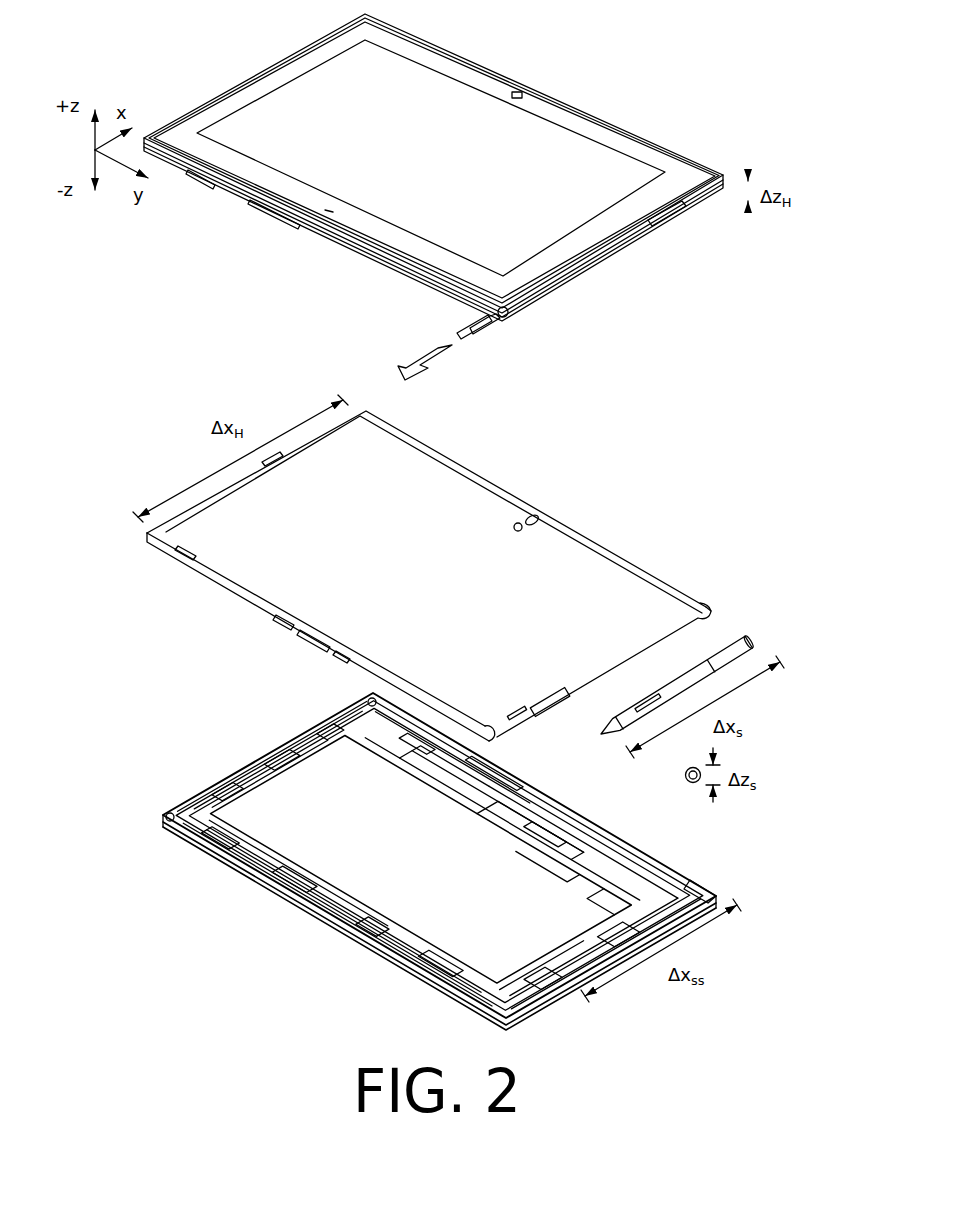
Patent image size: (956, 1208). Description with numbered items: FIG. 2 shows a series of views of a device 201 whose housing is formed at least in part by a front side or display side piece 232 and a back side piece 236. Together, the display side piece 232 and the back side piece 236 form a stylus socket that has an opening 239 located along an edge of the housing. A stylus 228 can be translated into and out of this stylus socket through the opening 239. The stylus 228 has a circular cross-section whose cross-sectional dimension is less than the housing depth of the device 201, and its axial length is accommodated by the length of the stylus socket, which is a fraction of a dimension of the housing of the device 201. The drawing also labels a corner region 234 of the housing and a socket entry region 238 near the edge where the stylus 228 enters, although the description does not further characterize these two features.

The device 201 is at (202, 56).
The stylus 228 is at (492, 320).
The front side or display side piece 232 is at (705, 180).
The housing corner piece 234 is at (706, 890).
The back side piece 236 is at (572, 286).
The stylus tube opening 238 is at (713, 611).
The opening 239 is at (486, 313).